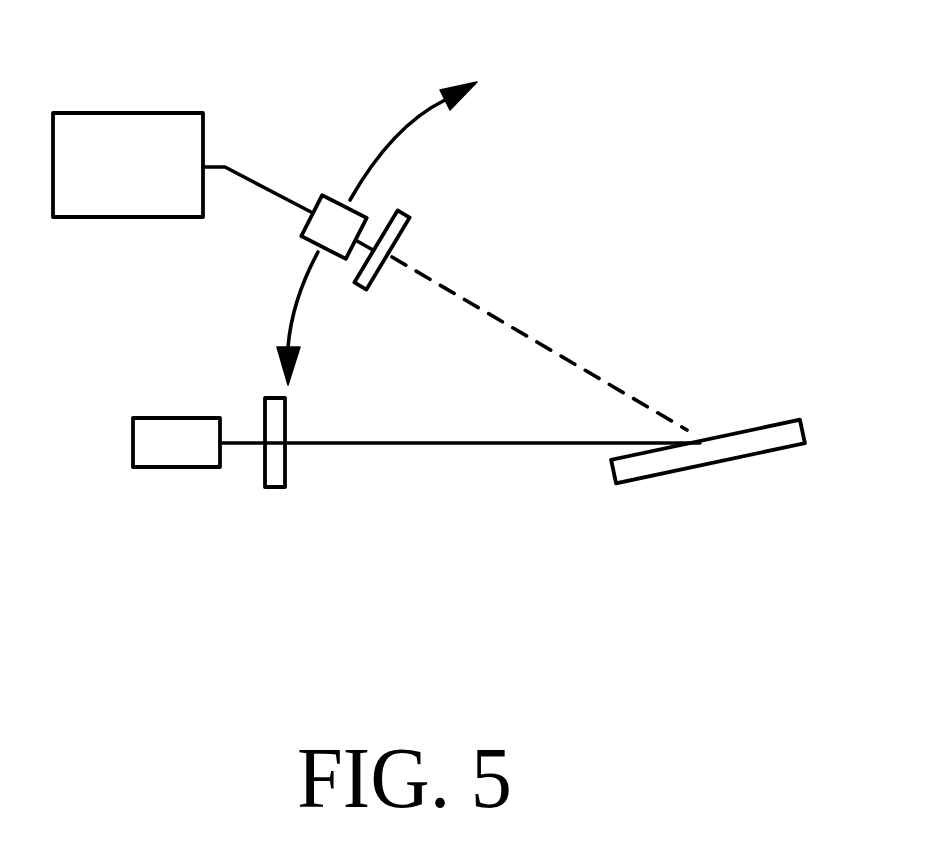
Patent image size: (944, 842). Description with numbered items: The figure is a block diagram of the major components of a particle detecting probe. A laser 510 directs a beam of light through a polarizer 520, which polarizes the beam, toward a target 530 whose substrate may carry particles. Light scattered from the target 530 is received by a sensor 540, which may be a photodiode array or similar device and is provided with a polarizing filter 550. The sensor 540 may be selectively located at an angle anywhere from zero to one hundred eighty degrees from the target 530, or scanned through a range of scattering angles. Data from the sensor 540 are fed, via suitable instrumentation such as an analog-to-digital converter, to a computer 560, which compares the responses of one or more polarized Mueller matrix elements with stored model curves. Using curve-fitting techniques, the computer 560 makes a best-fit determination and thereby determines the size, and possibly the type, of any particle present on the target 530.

The laser 510 is at (182, 467).
The polarizer 520 is at (285, 473).
The target 530 is at (713, 465).
The sensor 540 is at (342, 198).
The polarizing filter 550 is at (410, 247).
The computer 560 is at (143, 217).